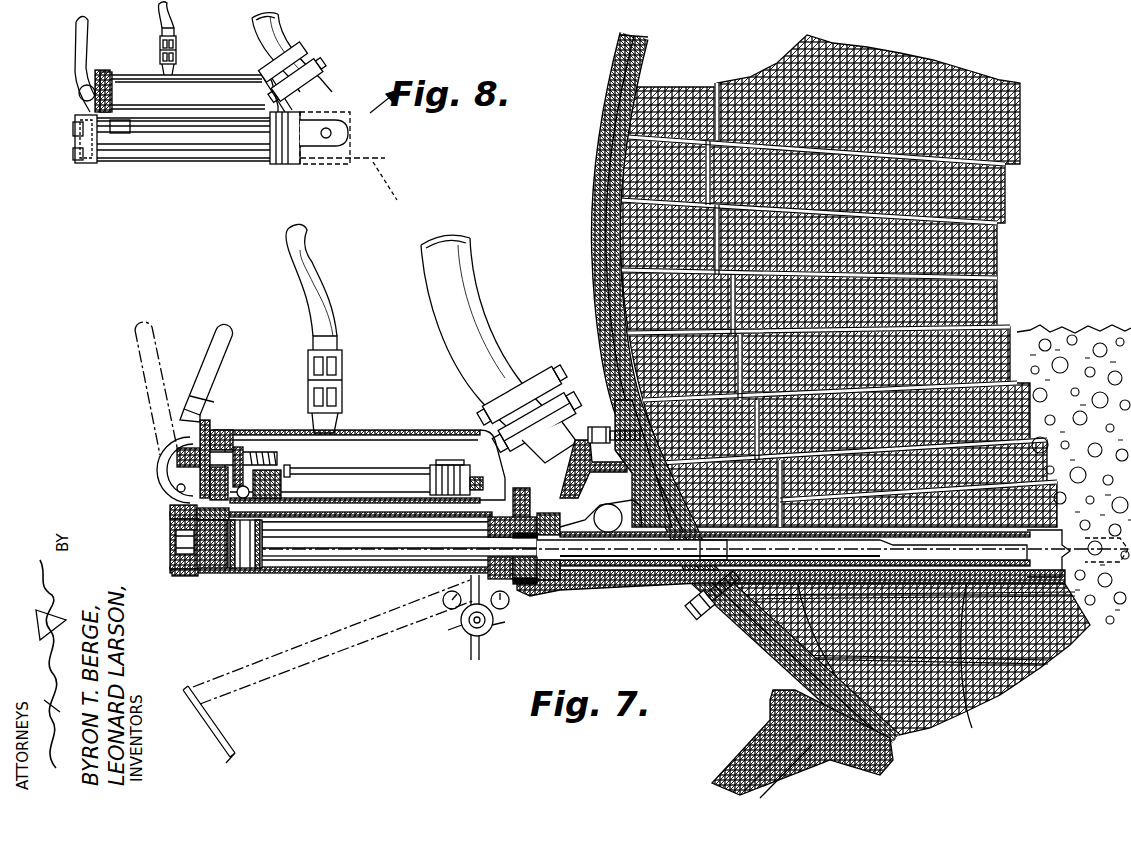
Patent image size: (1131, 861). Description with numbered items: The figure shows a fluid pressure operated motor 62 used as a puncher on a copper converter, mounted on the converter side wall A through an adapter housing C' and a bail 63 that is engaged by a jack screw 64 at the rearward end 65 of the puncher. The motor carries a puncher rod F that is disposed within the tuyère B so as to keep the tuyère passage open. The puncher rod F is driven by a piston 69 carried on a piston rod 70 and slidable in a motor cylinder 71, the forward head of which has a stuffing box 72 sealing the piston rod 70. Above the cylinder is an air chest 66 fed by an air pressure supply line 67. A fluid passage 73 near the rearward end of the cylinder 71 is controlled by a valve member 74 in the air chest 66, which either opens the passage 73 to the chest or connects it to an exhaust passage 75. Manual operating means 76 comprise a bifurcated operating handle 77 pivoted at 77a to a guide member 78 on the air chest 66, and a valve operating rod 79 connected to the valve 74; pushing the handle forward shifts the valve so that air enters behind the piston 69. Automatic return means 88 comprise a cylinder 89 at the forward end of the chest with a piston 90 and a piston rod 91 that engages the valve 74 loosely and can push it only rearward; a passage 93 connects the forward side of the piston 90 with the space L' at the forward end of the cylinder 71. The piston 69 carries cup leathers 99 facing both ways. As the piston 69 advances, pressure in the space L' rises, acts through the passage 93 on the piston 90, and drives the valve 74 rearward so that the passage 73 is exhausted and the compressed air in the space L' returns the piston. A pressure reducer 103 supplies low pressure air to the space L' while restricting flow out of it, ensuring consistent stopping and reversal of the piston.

In FIG. 7, the motor 62 is at (377, 428).
In FIG. 8, the motor 62 is at (189, 75).
In FIG. 7, the bail 63 is at (330, 680).
In FIG. 8, the bail 63 is at (163, 141).
In FIG. 7, the jack screw 64 is at (176, 556).
In FIG. 7, the rearward end 65 is at (175, 575).
In FIG. 7, the air chest 66 is at (420, 430).
In FIG. 8, the air chest 66 is at (221, 83).
In FIG. 7, the air pressure supply line 67 is at (342, 367).
In FIG. 8, the air pressure supply line 67 is at (160, 50).
In FIG. 7, the piston 69 is at (243, 570).
In FIG. 7, the piston rod 70 is at (322, 550).
In FIG. 7, the motor cylinder 71 is at (357, 573).
In FIG. 8, the motor cylinder 71 is at (200, 160).
In FIG. 7, the stuffing box 72 is at (505, 585).
In FIG. 7, the fluid passage 73 is at (198, 504).
In FIG. 7, the valve member 74 is at (273, 447).
In FIG. 7, the exhaust passage 75 is at (288, 489).
In FIG. 7, the manual valve operating means 76 is at (152, 473).
In FIG. 7, the operating handle 77 is at (206, 341).
In FIG. 8, the operating handle 77 is at (76, 40).
In FIG. 7, the pivot 77a is at (170, 487).
In FIG. 7, the guide member 78 is at (175, 433).
In FIG. 8, the guide member 78 is at (80, 95).
In FIG. 7, the valve operating rod 79 is at (240, 445).
In FIG. 7, the automatic valve return means 88 is at (450, 461).
In FIG. 7, the cylinder 89 is at (440, 463).
In FIG. 7, the piston 90 is at (500, 477).
In FIG. 7, the piston rod 91 is at (392, 470).
In FIG. 7, the passage 93 is at (515, 500).
In FIG. 7, the cup leathers 99 is at (233, 570).
In FIG. 7, the pressure reducer 103 is at (456, 640).
In FIG. 7, the side wall A is at (598, 328).
In FIG. 8, the side wall A is at (328, 70).
In FIG. 7, the tuyère B is at (965, 712).
In FIG. 7, the adapter housing C' is at (791, 592).
In FIG. 8, the adapter housing C' is at (321, 136).
In FIG. 7, the puncher rod F is at (690, 596).
In FIG. 7, the space L' is at (401, 586).